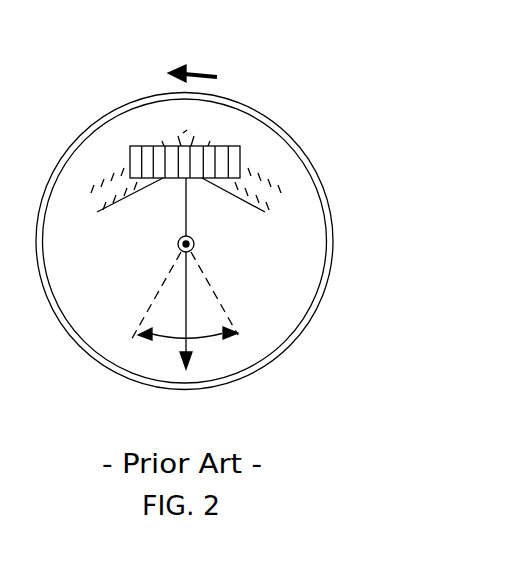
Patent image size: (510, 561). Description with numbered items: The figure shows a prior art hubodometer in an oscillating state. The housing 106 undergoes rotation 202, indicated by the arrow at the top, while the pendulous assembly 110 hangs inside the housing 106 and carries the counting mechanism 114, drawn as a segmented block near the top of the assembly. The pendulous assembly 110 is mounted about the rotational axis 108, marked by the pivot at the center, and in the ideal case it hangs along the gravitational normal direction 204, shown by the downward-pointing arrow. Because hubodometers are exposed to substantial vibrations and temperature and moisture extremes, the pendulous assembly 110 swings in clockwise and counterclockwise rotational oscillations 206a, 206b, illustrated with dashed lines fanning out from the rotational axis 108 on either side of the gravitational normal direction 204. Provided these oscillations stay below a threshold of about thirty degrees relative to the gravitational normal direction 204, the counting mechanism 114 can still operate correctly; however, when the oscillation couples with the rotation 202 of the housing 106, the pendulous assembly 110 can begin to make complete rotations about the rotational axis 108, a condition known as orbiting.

The housing 106 is at (80, 135).
The pendulous assembly 110 is at (292, 288).
The counting mechanism 114 is at (227, 148).
The rotational axis 108 is at (195, 242).
The gravitational normal direction 204 is at (185, 288).
The clockwise rotational oscillation 206a is at (163, 339).
The counterclockwise rotational oscillation 206b is at (208, 339).
The rotation of the housing 202 is at (204, 71).